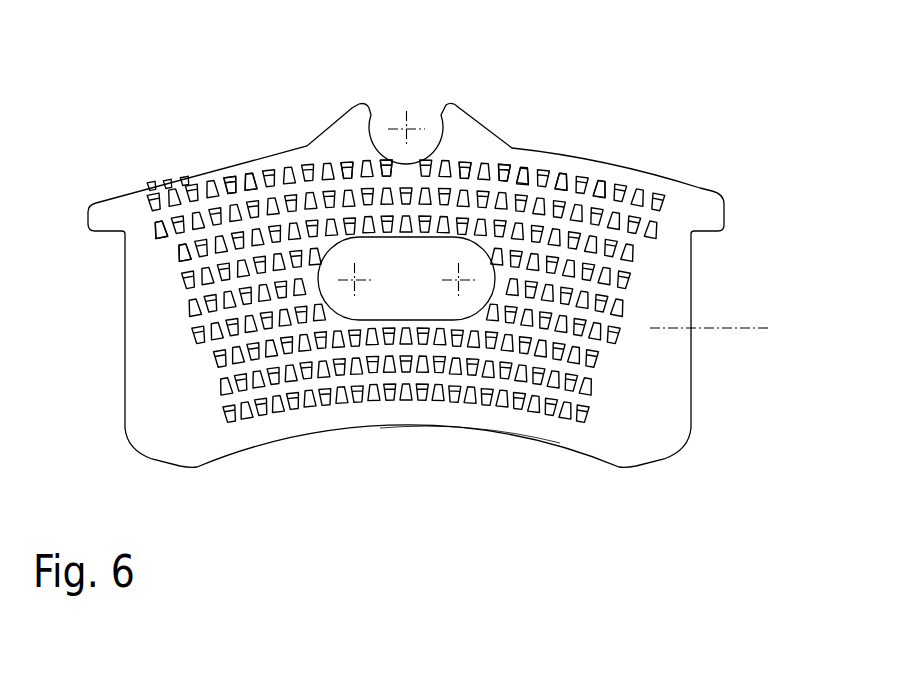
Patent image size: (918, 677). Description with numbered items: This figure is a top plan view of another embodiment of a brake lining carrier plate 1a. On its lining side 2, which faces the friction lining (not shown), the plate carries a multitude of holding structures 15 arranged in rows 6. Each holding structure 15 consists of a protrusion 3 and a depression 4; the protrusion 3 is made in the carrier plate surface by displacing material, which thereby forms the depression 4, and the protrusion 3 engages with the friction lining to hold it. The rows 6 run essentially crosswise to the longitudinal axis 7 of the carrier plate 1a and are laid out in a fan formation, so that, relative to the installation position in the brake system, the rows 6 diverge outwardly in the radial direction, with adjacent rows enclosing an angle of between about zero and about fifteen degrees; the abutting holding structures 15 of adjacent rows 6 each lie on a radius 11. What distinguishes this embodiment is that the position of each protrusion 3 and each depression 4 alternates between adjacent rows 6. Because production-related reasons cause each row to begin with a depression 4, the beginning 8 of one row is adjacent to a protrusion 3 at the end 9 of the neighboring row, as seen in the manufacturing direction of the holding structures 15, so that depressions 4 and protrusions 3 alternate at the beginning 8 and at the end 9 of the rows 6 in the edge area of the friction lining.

The brake lining carrier plate 1a is at (682, 125).
The lining side 2 is at (150, 360).
The protrusion 3 is at (601, 185).
The depression 4 is at (508, 173).
The rows 6 is at (262, 415).
The longitudinal axis 7 is at (743, 328).
The beginning 8 is at (229, 177).
The end 9 is at (249, 174).
The radius 11 is at (463, 433).
The holding structures 15 is at (183, 176).